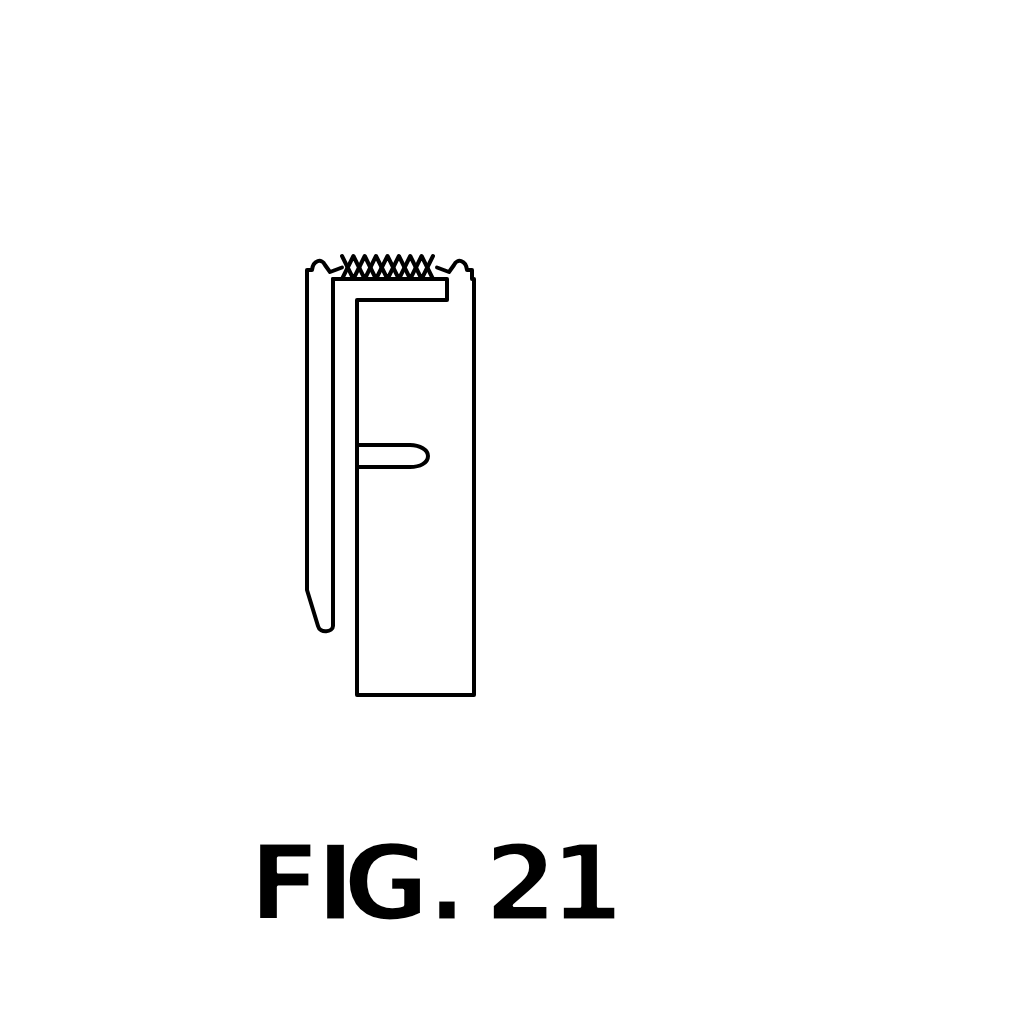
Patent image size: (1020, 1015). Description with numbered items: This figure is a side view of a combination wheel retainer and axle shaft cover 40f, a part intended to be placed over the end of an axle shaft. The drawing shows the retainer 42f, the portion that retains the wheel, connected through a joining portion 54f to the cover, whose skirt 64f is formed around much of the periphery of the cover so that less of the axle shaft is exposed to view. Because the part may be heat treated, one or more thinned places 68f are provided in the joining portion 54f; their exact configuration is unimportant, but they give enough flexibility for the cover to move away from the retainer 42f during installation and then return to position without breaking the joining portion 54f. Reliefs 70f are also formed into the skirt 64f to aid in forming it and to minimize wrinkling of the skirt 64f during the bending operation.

The combination wheel retainer and axle shaft cover 40f is at (598, 195).
The retainer 42f is at (308, 480).
The joining portion 54f is at (405, 232).
The skirt 64f is at (688, 581).
The thinned places 68f is at (417, 453).
The reliefs 70f is at (368, 258).